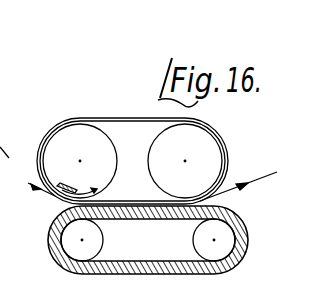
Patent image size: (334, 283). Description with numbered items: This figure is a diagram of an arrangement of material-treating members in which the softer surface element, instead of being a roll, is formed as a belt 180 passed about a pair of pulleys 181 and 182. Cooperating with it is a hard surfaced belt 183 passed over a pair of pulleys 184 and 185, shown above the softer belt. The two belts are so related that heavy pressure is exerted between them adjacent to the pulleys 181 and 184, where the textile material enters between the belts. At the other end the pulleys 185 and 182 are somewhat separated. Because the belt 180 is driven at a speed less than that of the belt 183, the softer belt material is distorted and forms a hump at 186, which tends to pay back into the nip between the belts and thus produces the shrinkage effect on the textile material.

The belt 180 is at (139, 217).
The pulley 181 is at (72, 243).
The pulley 182 is at (223, 233).
The hard surfaced belt 183 is at (83, 119).
The pulley 184 is at (60, 142).
The pulley 185 is at (198, 142).
The hump 186 is at (135, 203).